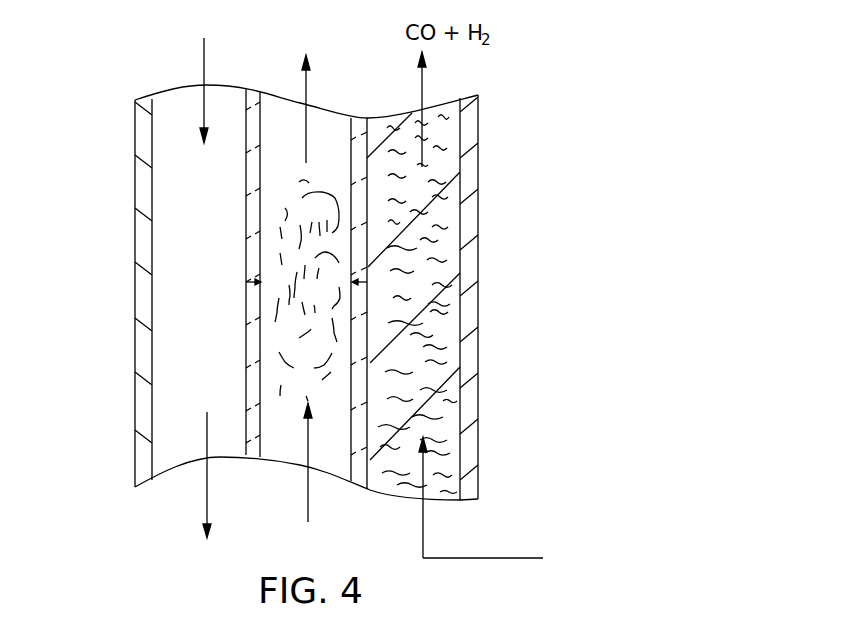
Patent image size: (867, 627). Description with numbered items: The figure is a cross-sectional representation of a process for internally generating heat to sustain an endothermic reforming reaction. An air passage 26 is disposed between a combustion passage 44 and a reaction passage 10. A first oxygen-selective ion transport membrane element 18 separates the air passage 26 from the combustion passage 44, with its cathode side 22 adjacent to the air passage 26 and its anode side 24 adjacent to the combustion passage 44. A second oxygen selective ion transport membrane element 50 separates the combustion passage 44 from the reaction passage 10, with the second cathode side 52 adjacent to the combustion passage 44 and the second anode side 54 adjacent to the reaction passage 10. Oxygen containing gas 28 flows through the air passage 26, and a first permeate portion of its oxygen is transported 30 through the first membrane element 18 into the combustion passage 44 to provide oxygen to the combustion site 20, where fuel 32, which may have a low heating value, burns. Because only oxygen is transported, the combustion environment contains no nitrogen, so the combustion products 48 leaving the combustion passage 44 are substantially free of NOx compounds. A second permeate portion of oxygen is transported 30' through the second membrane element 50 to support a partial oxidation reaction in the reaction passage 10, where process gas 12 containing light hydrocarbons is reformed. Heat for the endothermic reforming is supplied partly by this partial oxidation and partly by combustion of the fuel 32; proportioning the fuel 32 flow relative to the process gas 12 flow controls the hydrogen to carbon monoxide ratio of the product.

The reaction passage 10 is at (446, 237).
The process gas 12 is at (498, 558).
The first oxygen-selective ion transport membrane element 18 is at (246, 185).
The combustion site 20 is at (302, 220).
The cathode side 22 is at (246, 425).
The anode side 24 is at (260, 421).
The air passage 26 is at (180, 286).
The oxygen containing gas 28 is at (203, 66).
The oxygen transport 30 is at (178, 312).
The second oxygen transport 30' is at (442, 305).
The fuel 32 is at (311, 513).
The combustion passage 44 is at (288, 441).
The combustion products 48 is at (308, 80).
The second oxygen selective ion transport membrane element 50 is at (366, 486).
The second cathode side 52 is at (351, 152).
The second anode side 54 is at (372, 152).